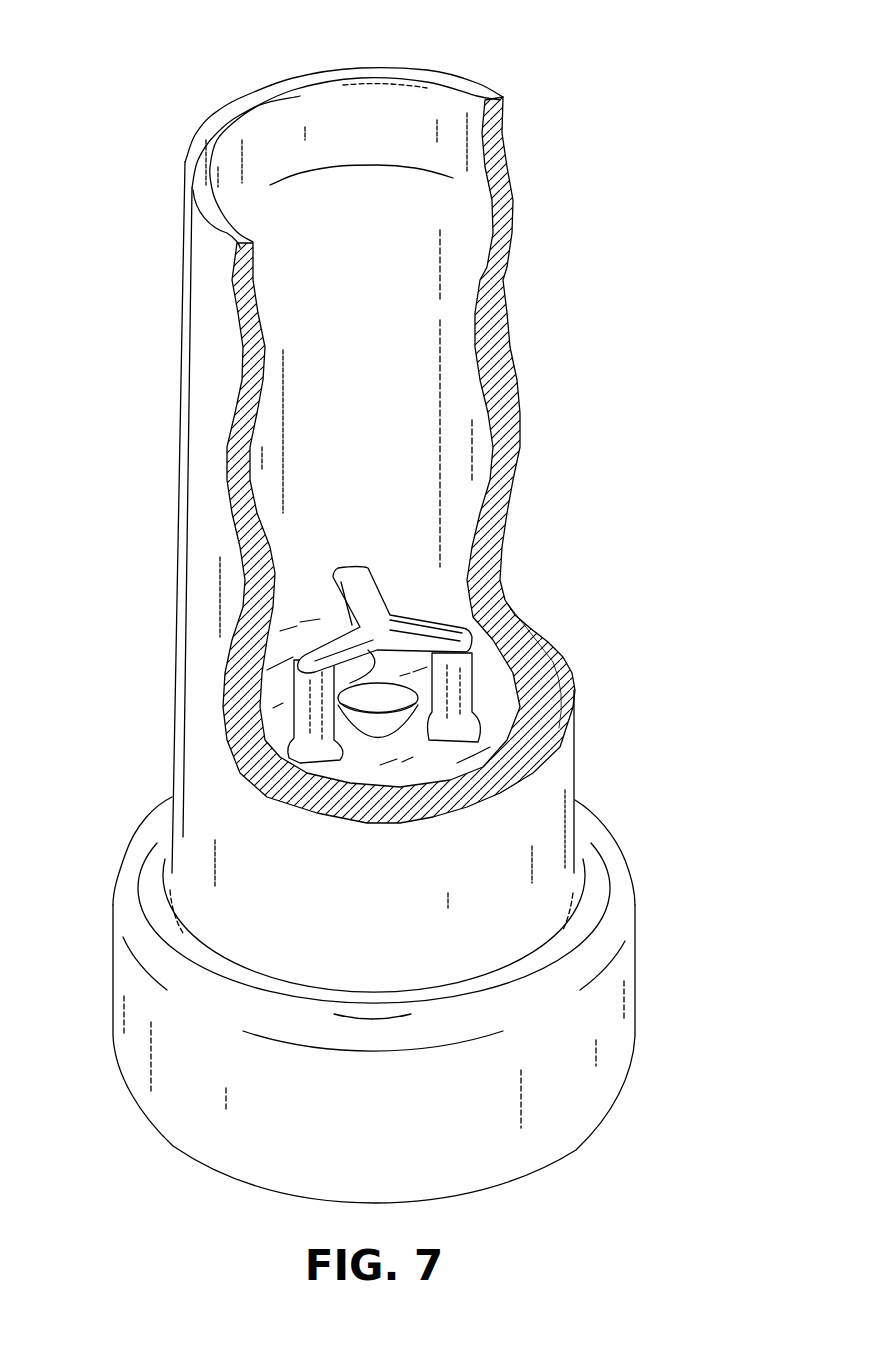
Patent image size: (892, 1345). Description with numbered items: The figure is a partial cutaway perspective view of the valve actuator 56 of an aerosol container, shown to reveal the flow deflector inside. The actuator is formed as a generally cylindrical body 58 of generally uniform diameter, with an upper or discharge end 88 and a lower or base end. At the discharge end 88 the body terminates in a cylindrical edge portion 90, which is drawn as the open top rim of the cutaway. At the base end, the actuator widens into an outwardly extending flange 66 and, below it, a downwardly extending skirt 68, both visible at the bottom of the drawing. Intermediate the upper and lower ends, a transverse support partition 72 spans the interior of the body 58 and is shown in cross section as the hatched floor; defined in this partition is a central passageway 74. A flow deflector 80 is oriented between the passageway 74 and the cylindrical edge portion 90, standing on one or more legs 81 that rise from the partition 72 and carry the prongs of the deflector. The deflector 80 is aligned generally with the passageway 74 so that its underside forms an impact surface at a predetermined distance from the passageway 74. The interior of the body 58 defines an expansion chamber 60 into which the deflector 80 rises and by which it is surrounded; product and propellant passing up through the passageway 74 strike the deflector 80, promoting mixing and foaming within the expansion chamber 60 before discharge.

The valve actuator 56 is at (680, 367).
The cylindrical body 58 is at (178, 527).
The expansion chamber 60 is at (378, 436).
The flange 66 is at (620, 877).
The skirt 68 is at (638, 1003).
The transverse support partition 72 is at (455, 745).
The central passageway 74 is at (387, 720).
The flow deflector 80 is at (418, 627).
The legs 81 is at (440, 637).
The discharge end 88 is at (332, 130).
The cylindrical edge portion 90 is at (453, 78).